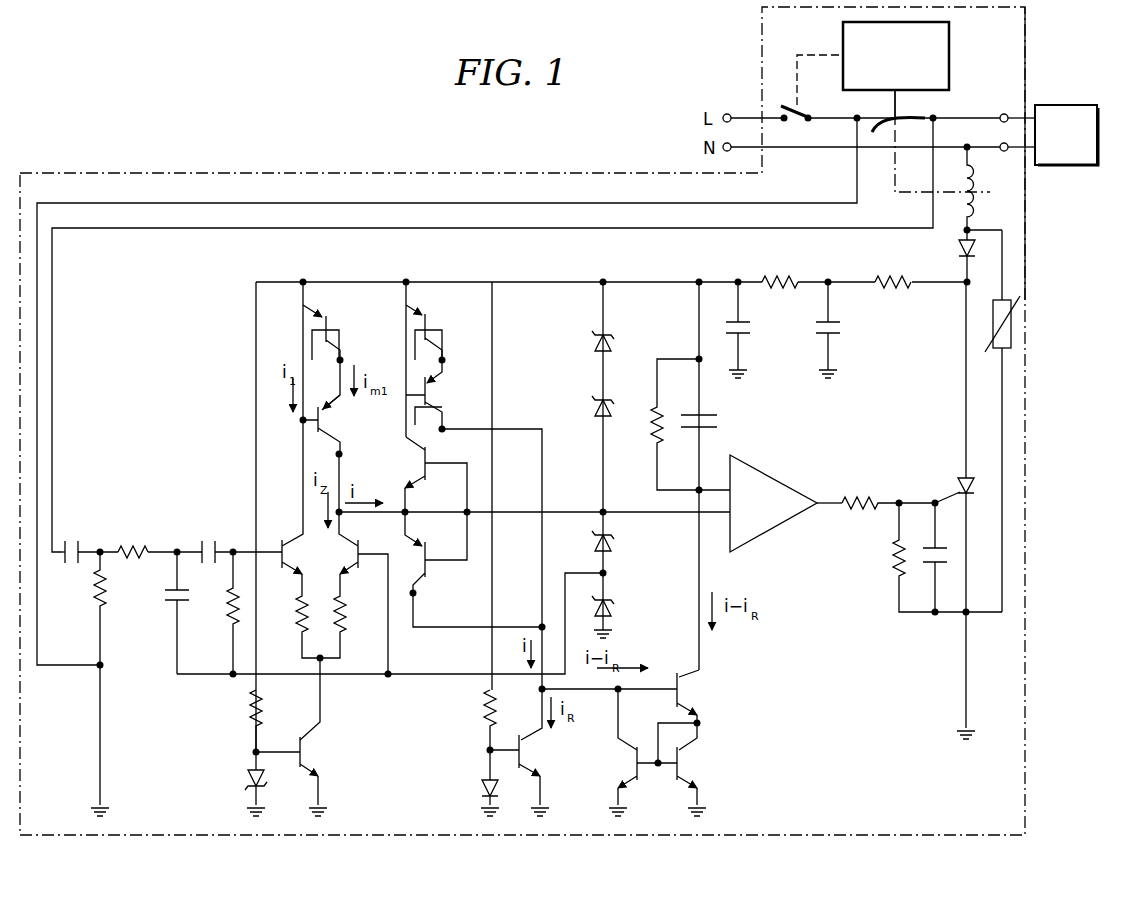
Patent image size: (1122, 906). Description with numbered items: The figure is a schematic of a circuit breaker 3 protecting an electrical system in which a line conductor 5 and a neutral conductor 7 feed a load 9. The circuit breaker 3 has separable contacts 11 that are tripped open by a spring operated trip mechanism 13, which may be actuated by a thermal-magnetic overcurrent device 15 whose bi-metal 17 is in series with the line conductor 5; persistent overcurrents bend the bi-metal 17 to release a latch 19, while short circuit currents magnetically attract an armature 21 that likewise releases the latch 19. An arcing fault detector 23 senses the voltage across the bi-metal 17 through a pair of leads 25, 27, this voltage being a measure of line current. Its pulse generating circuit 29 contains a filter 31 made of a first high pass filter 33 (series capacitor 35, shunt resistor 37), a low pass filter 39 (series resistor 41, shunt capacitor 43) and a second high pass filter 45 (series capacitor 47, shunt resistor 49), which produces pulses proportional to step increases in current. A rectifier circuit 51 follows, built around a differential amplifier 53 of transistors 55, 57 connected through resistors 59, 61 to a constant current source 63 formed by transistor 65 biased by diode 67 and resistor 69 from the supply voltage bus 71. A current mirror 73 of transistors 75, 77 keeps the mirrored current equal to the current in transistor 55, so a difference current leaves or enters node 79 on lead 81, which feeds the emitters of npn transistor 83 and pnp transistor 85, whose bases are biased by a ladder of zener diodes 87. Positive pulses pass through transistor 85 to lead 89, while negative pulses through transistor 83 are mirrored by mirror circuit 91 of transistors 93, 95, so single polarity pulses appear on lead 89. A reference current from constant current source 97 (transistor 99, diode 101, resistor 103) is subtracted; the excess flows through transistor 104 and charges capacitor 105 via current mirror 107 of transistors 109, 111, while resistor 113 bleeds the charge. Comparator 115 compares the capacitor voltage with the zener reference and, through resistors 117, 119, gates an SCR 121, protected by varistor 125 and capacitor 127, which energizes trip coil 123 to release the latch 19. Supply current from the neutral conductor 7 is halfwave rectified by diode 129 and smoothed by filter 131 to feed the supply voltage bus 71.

The circuit breaker 3 is at (305, 173).
The line conductor 5 is at (752, 118).
The neutral conductor 7 is at (745, 148).
The load 9 is at (1056, 105).
The separable contacts 11 is at (793, 106).
The trip mechanism 13 is at (950, 50).
The thermal-magnetic overcurrent device 15 is at (992, 66).
The bi-metal 17 is at (900, 124).
The latch 19 is at (905, 95).
The armature 21 is at (872, 132).
The arcing fault detector 23 is at (560, 268).
The lead 25 is at (790, 203).
The lead 27 is at (698, 236).
The pulse generating circuit 29 is at (195, 418).
The filter 31 is at (132, 530).
The first high pass filter 33 is at (92, 565).
The series capacitor 35 is at (72, 545).
The shunt resistor 37 is at (106, 600).
The low pass filter 39 is at (170, 560).
The series resistor 41 is at (150, 545).
The shunt capacitor 43 is at (165, 597).
The second high pass filter 45 is at (222, 568).
The series capacitor 47 is at (214, 545).
The shunt resistor 49 is at (240, 608).
The rectifier circuit 51 is at (252, 347).
The differential amplifier 53 is at (297, 517).
The transistor 55 is at (268, 545).
The transistor 57 is at (362, 570).
The resistor 59 is at (295, 610).
The resistor 61 is at (348, 620).
The constant current source 63 is at (330, 738).
The transistor 65 is at (315, 760).
The diode 67 is at (245, 780).
The resistor 69 is at (247, 705).
The supply voltage bus 71 is at (340, 282).
The current mirror 73 is at (332, 322).
The transistor 75 is at (310, 338).
The transistor 77 is at (332, 426).
The node 79 is at (344, 514).
The lead 81 is at (402, 508).
The npn transistor 83 is at (430, 460).
The pnp transistor 85 is at (428, 554).
The zener diodes 87 is at (593, 346).
The lead 89 is at (548, 636).
The mirror circuit 91 is at (436, 392).
The transistor 93 is at (425, 312).
The transistor 95 is at (425, 425).
The constant current source 97 is at (482, 752).
The transistor 99 is at (517, 738).
The diode 101 is at (480, 788).
The resistor 103 is at (478, 705).
The transistor 104 is at (634, 764).
The capacitor 105 is at (738, 418).
The current mirror 107 is at (712, 720).
The transistor 109 is at (672, 692).
The transistor 111 is at (672, 772).
The resistor 113 is at (650, 425).
The comparator 115 is at (780, 545).
The resistor 117 is at (858, 495).
The resistor 119 is at (893, 565).
The SCR 121 is at (960, 478).
The trip coil 123 is at (980, 200).
The varistor 125 is at (1012, 300).
The capacitor 127 is at (934, 548).
The diode 129 is at (958, 248).
The filter 131 is at (852, 298).